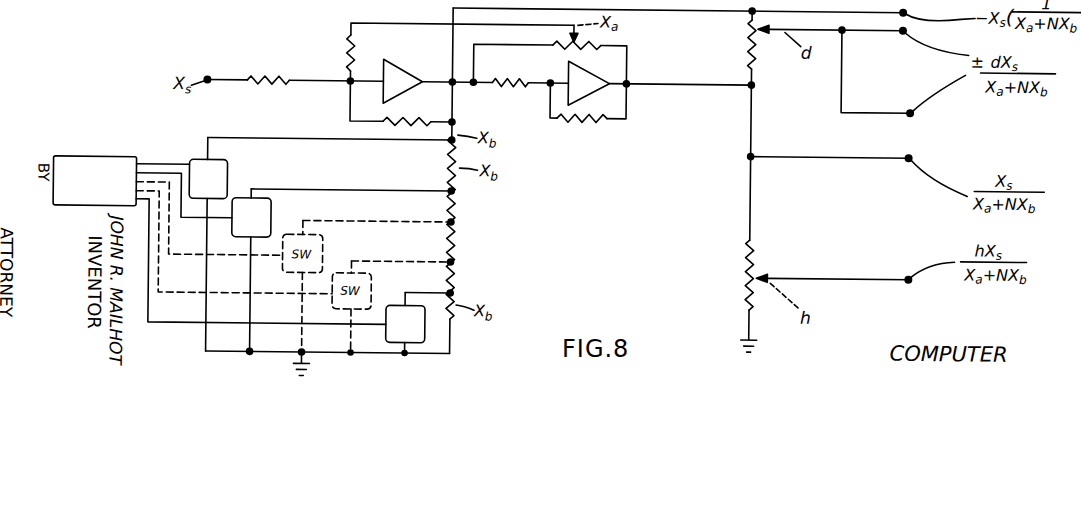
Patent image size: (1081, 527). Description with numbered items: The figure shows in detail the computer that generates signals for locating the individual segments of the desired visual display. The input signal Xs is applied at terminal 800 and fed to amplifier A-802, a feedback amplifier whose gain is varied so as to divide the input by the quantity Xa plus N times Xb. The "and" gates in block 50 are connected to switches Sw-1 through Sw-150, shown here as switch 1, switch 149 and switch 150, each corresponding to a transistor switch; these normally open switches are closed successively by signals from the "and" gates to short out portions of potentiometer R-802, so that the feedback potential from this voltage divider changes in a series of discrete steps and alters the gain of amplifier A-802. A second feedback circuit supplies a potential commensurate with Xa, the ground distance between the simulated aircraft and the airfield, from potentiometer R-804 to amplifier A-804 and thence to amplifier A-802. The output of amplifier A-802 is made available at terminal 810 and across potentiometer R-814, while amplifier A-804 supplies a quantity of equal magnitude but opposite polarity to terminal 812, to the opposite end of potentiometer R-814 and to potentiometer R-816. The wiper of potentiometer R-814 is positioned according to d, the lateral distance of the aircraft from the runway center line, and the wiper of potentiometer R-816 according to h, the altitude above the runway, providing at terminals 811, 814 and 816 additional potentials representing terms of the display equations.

The input terminal 800 is at (207, 80).
The "and" gate block 50 is at (105, 160).
The switch Sw- 150 is at (293, 245).
The switch Sw- 149 is at (293, 265).
The switch Sw- 1 is at (293, 277).
The amplifier A-802 is at (405, 57).
The amplifier A-804 is at (600, 78).
The potentiometer R-802 is at (458, 219).
The potentiometer R-804 is at (604, 44).
The potentiometer R-814 is at (756, 56).
The potentiometer R-816 is at (746, 256).
The output terminal 810 is at (937, 13).
The terminal 811 is at (903, 68).
The output terminal 812 is at (858, 172).
The terminal 814 is at (936, 100).
The terminal 816 is at (930, 285).